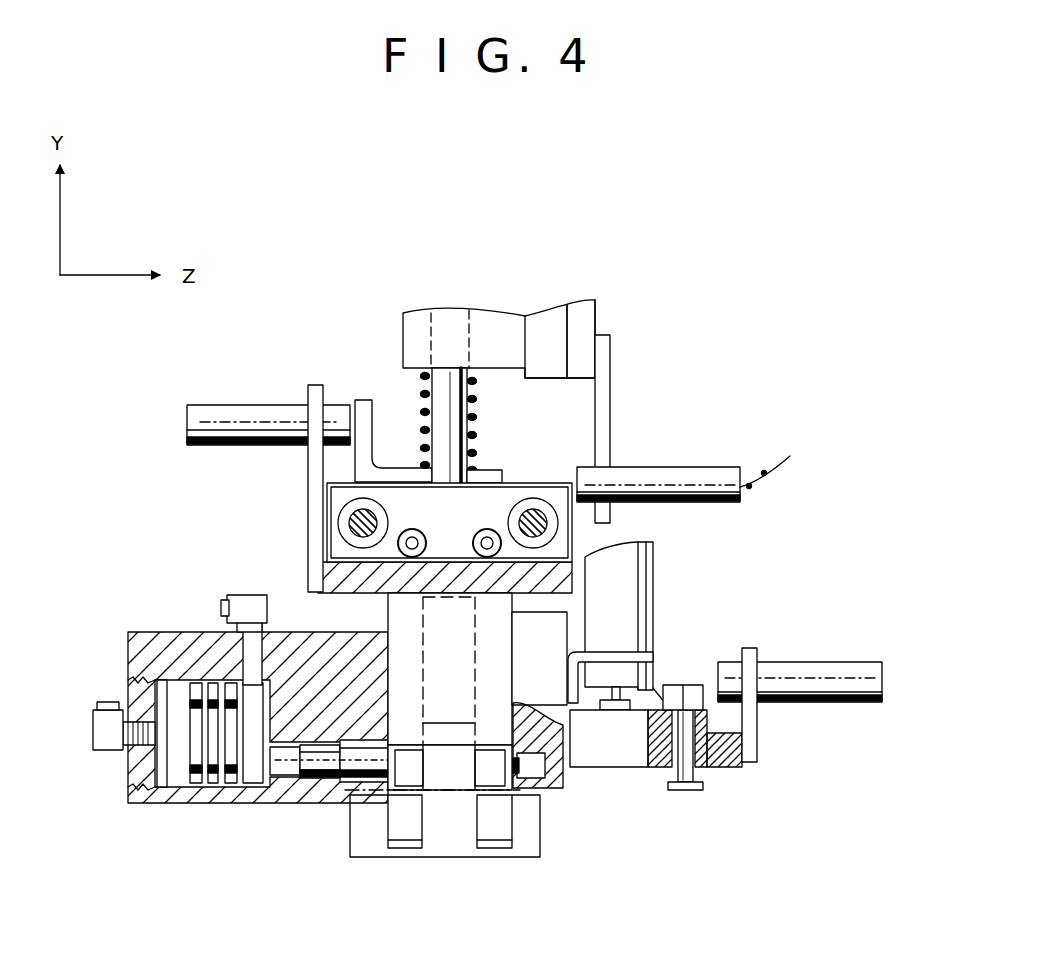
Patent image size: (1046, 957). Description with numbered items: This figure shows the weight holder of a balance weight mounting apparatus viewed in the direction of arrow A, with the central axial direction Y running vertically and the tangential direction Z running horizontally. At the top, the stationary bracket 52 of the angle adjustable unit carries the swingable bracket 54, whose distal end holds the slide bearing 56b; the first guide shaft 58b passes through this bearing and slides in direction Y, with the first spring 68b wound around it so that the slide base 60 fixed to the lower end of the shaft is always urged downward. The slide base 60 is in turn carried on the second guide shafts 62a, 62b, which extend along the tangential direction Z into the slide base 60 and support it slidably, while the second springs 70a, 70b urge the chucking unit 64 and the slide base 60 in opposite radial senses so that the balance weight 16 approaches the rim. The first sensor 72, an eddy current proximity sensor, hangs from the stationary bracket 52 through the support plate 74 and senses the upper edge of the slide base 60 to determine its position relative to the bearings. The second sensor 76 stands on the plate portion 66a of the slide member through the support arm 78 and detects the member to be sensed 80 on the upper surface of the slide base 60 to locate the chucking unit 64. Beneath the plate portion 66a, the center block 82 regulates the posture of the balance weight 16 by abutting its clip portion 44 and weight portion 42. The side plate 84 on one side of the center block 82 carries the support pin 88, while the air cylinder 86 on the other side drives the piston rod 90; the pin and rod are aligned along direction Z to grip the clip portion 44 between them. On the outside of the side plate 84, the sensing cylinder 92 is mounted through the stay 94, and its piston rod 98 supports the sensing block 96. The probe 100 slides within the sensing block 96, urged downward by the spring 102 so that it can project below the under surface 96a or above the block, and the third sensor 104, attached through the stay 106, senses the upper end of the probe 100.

The balance weight 16 is at (512, 864).
The weight portion 42 is at (545, 806).
The clip portion 44 is at (450, 745).
The stationary bracket 52 is at (585, 314).
The swingable bracket 54 is at (548, 322).
The slide bearing 56b is at (404, 326).
The first guide shaft 58b is at (466, 452).
The slide base 60 is at (336, 490).
The second guide shaft 62a is at (352, 530).
The second guide shaft 62b is at (540, 500).
The chucking unit 64 is at (288, 810).
The plate portion 66a is at (356, 575).
The first spring 68b is at (476, 408).
The second spring 70a is at (432, 524).
The second spring 70b is at (478, 536).
The first sensor 72 is at (673, 480).
The support plate 74 is at (605, 395).
The second sensor 76 is at (235, 415).
The support arm 78 is at (310, 455).
The member to be sensed 80 is at (358, 402).
The center block 82 is at (490, 653).
The side plate 84 is at (560, 660).
The air cylinder 86 is at (218, 800).
The support pin 88 is at (515, 792).
The piston rod 90 is at (372, 792).
The sensing cylinder 92 is at (637, 560).
The stay 94 is at (637, 652).
The sensing block 96 is at (600, 745).
The under surface 96a is at (651, 770).
The piston rod 98 is at (628, 699).
The probe 100 is at (680, 790).
The spring 102 is at (712, 757).
The third sensor 104 is at (822, 668).
The stay 106 is at (758, 745).